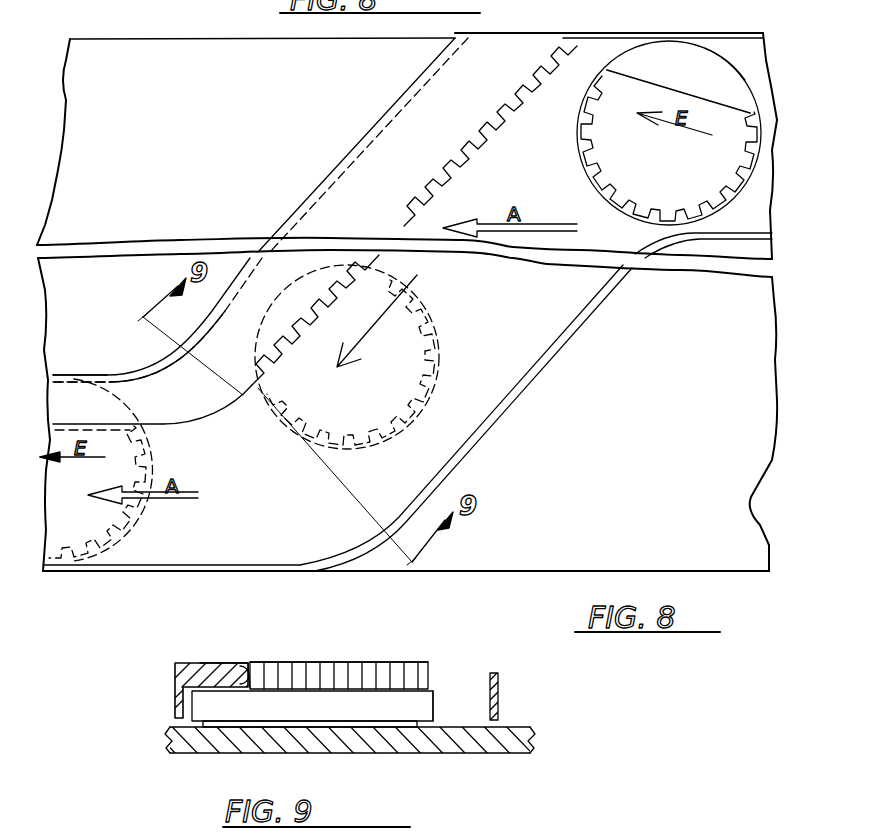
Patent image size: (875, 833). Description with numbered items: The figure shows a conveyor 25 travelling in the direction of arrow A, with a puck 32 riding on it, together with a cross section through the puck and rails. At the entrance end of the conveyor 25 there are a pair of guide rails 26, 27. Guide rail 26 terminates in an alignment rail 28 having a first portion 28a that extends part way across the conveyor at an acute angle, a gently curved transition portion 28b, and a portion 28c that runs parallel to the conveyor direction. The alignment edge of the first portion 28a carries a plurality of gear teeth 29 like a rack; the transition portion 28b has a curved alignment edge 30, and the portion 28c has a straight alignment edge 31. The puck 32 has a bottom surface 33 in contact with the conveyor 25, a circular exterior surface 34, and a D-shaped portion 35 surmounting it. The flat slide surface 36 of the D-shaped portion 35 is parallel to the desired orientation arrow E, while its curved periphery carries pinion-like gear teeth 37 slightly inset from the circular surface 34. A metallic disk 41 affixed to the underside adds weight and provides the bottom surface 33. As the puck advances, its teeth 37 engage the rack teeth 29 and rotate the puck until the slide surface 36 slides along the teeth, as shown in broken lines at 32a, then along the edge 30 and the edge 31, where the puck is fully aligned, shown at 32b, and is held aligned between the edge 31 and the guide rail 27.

In FIG. 8, the conveyor 25 is at (757, 375).
In FIG. 9, the conveyor 25 is at (368, 752).
In FIG. 8, the guide rail 26 is at (708, 33).
In FIG. 8, the guide rail 27 is at (722, 238).
In FIG. 9, the guide rail 27 is at (498, 693).
In FIG. 8, the alignment rail 28 is at (345, 125).
In FIG. 9, the alignment rail 28 is at (160, 690).
In FIG. 8, the first portion of alignment rail 28a is at (430, 97).
In FIG. 9, the first portion of alignment rail 28a is at (208, 650).
In FIG. 8, the transition portion of alignment rail 28b is at (217, 400).
In FIG. 8, the parallel portion of alignment rail 28c is at (95, 397).
In FIG. 8, the gear teeth 29 is at (482, 138).
In FIG. 9, the gear teeth 29 is at (240, 663).
In FIG. 8, the curved alignment edge 30 is at (202, 420).
In FIG. 8, the alignment edge 31 is at (80, 425).
In FIG. 8, the puck 32 is at (658, 53).
In FIG. 9, the puck 32 is at (397, 663).
In FIG. 8, the puck in broken lines 32a is at (437, 345).
In FIG. 8, the fully aligned puck in broken lines 32b is at (110, 468).
In FIG. 9, the puck bottom surface 33 is at (333, 732).
In FIG. 8, the circular exterior surface 34 is at (725, 62).
In FIG. 9, the circular exterior surface 34 is at (423, 703).
In FIG. 8, the D-shaped portion 35 is at (728, 150).
In FIG. 9, the D-shaped portion 35 is at (363, 663).
In FIG. 8, the slide surface 36 is at (708, 97).
In FIG. 9, the slide surface 36 is at (243, 683).
In FIG. 8, the gear teeth 37 is at (610, 203).
In FIG. 9, the gear teeth 37 is at (272, 668).
In FIG. 9, the metallic disk 41 is at (410, 722).